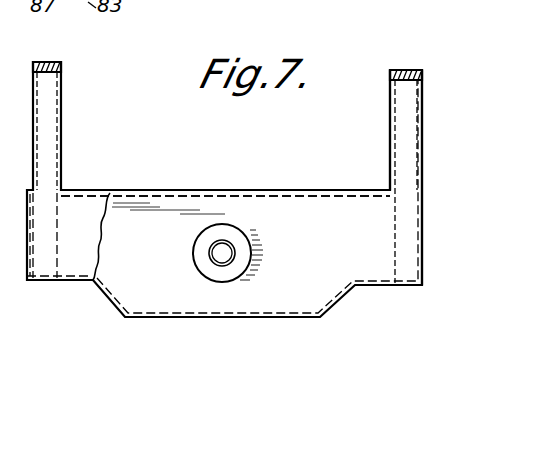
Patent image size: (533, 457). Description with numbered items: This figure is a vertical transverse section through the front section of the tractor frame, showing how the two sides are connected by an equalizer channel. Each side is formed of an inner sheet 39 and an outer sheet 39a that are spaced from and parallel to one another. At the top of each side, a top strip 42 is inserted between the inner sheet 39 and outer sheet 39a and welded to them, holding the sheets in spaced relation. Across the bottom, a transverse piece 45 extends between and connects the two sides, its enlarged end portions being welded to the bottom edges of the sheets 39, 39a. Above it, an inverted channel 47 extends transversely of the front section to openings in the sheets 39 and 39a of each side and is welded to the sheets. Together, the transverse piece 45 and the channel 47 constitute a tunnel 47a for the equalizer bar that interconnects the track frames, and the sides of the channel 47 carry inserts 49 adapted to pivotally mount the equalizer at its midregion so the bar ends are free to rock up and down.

The inner sheet 39 is at (61, 113).
The outer sheet 39a is at (424, 107).
The top strip 42 is at (56, 63).
The transverse piece 45 is at (143, 318).
The inverted channel 47 is at (175, 190).
The tunnel 47a is at (286, 196).
The inserts 49 is at (247, 253).